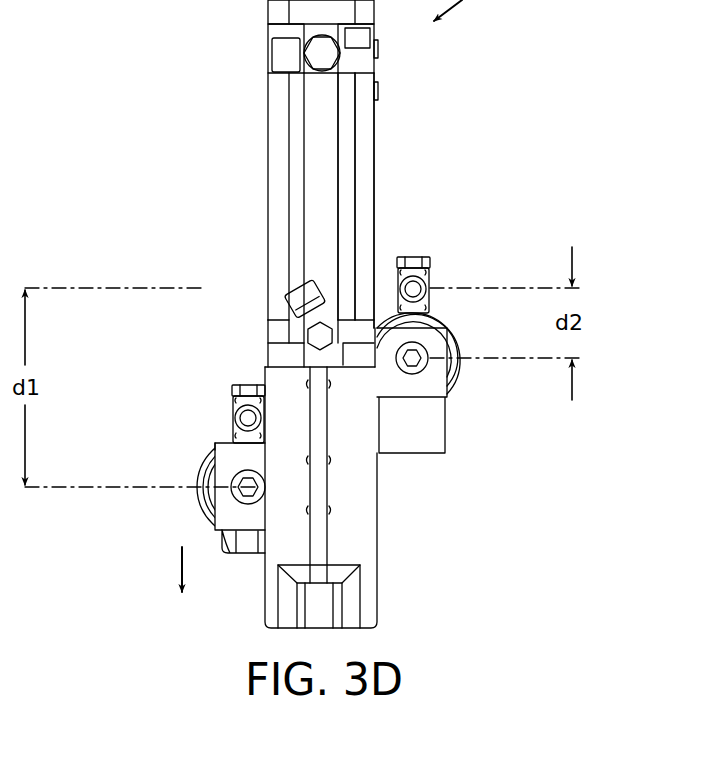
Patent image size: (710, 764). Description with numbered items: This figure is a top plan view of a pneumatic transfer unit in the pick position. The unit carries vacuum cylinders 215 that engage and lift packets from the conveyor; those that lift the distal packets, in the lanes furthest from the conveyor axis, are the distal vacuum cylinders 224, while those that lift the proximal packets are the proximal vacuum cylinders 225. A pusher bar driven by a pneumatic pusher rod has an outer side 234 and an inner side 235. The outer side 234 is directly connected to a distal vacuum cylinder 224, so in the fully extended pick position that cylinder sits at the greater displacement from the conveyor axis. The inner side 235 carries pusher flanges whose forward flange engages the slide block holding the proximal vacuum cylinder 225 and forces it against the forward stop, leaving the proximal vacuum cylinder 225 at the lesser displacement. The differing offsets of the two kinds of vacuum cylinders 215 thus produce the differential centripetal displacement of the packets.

The outer side 234 is at (246, 160).
The inner side 235 is at (394, 163).
The vacuum cylinder 215 is at (196, 470).
The distal vacuum cylinder 224 is at (186, 511).
The proximal vacuum cylinder 225 is at (470, 400).